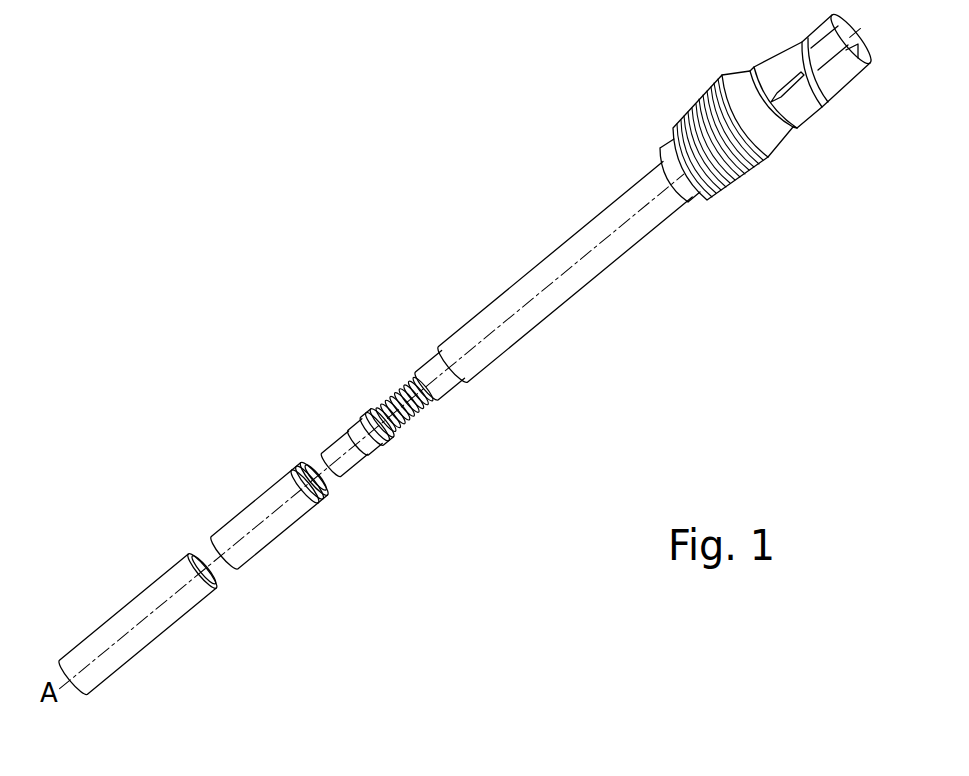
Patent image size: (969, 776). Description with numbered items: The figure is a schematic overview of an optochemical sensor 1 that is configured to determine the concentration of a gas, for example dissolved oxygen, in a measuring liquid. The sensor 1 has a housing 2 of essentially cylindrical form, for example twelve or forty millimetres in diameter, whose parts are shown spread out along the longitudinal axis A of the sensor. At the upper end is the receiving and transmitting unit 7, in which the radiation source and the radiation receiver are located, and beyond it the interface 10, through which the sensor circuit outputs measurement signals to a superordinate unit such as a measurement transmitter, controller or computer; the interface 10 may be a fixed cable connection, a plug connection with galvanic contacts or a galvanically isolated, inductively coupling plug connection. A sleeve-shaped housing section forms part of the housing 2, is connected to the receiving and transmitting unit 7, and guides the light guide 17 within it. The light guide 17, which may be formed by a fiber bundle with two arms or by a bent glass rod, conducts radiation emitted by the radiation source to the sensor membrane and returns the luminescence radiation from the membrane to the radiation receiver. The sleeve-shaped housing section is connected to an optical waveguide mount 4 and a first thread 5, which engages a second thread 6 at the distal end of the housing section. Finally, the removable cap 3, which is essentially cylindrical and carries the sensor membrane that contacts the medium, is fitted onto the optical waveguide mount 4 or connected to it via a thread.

The optochemical sensor 1 is at (440, 210).
The housing 2 is at (558, 297).
The removable cap 3 is at (153, 632).
The optical waveguide mount 4 is at (260, 537).
The first thread 5 is at (317, 492).
The second thread 6 is at (457, 383).
The receiving and transmitting unit 7 is at (702, 200).
The interface 10 is at (848, 75).
The light guide 17 is at (367, 418).